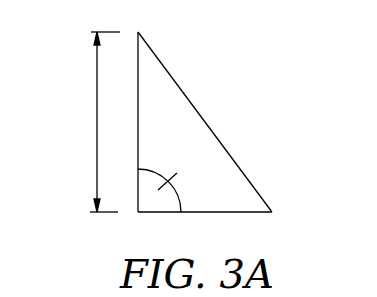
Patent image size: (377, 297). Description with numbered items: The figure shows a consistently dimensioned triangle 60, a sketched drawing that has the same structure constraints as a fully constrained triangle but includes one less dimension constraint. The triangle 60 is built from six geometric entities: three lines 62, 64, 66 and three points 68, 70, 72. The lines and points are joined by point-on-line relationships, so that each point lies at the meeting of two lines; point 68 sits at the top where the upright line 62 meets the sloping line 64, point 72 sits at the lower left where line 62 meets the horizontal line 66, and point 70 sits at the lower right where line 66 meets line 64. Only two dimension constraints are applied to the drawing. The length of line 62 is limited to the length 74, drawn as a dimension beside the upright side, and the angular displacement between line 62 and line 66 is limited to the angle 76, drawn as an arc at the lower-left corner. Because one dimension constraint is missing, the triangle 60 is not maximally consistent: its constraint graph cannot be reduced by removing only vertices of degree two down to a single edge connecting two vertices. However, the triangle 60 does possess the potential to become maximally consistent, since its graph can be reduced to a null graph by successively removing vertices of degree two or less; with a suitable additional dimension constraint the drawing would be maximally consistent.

The consistently dimensioned triangle 60 is at (233, 97).
The line 62 is at (138, 87).
The line 64 is at (244, 173).
The line 66 is at (193, 212).
The point 68 is at (138, 32).
The point 70 is at (287, 211).
The point 72 is at (138, 215).
The length 74 is at (97, 128).
The angle 76 is at (182, 198).